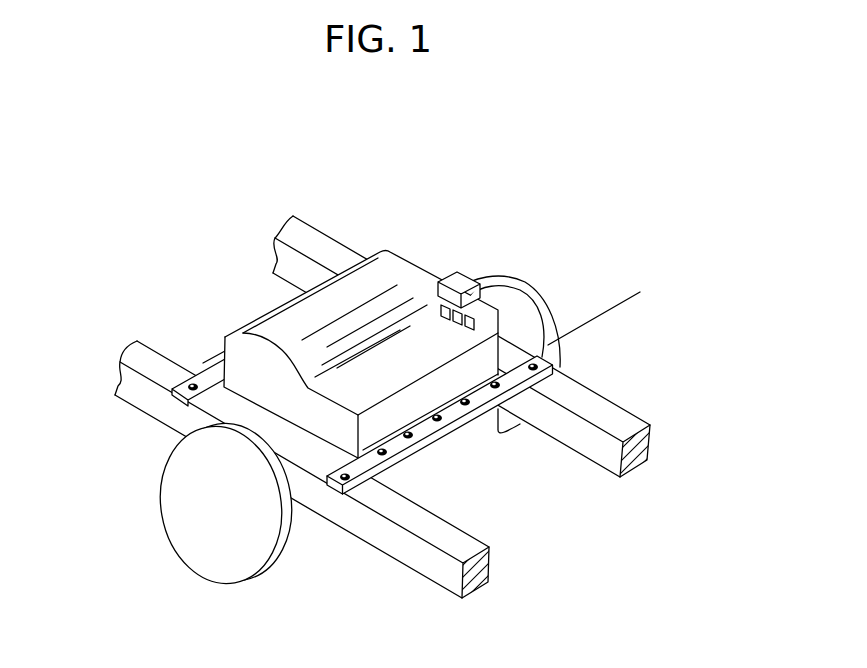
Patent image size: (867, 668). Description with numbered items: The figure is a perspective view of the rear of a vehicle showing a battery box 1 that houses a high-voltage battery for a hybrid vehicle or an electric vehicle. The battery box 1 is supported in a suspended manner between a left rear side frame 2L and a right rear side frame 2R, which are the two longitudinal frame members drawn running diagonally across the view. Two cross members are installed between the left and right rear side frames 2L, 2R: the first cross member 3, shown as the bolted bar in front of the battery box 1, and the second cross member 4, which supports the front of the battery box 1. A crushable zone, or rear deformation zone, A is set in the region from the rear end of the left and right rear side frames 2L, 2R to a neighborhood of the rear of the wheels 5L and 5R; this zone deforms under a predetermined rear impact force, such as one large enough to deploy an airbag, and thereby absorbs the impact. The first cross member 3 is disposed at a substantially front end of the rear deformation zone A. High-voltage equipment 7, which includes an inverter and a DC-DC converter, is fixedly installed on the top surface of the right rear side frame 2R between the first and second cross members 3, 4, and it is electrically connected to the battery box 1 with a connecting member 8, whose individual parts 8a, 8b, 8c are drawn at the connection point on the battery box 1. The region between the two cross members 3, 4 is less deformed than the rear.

The battery box 1 is at (382, 199).
The left rear side frame 2L is at (468, 553).
The right rear side frame 2R is at (626, 424).
The first cross member 3 is at (438, 438).
The second cross member 4 is at (198, 378).
The left wheel 5L is at (158, 503).
The right wheel 5R is at (549, 319).
The high-voltage equipment 7 is at (447, 290).
The connecting member 8 is at (499, 247).
The first terminal 8a is at (459, 280).
The second terminal 8b is at (469, 285).
The third terminal 8c is at (479, 305).
The crushable zone (rear deformation zone) A is at (632, 311).